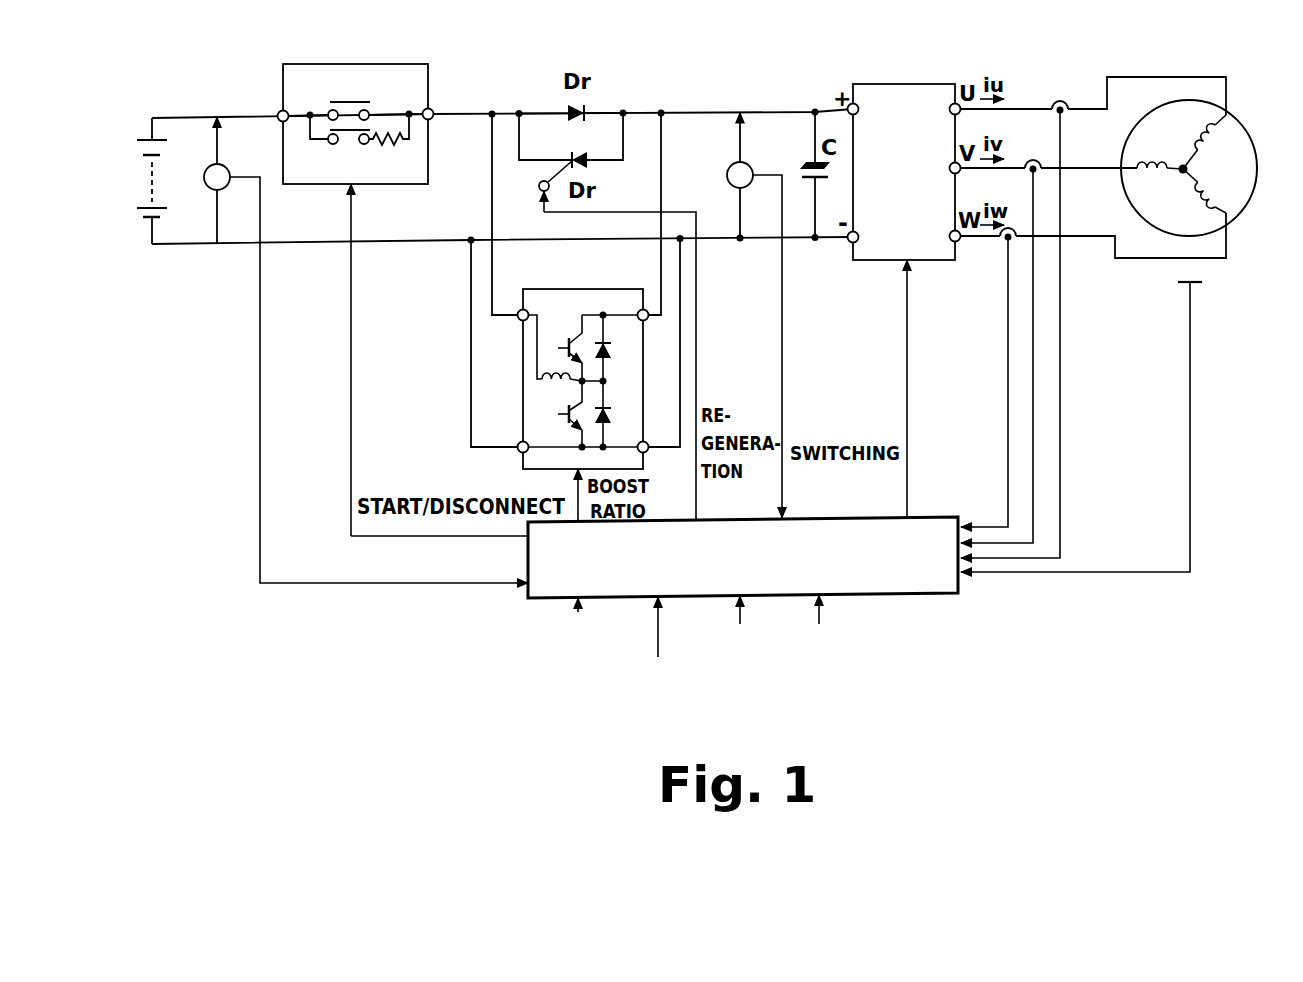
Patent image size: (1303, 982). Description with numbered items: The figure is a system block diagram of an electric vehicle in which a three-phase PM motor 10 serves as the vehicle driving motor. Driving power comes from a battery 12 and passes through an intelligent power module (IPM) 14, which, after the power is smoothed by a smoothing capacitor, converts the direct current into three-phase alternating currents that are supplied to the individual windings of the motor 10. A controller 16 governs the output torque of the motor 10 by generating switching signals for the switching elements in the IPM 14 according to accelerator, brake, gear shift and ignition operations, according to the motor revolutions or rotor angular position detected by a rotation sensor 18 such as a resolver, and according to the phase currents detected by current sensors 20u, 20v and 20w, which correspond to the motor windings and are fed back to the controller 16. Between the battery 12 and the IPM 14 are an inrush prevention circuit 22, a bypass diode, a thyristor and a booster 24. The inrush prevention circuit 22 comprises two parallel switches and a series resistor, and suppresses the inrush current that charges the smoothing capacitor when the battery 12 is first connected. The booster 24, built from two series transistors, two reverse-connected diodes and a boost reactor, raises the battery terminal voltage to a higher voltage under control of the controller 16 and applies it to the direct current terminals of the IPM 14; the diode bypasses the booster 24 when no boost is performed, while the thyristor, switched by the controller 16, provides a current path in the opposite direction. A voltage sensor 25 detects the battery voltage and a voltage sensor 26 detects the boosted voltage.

The three-phase PM motor 10 is at (1236, 124).
The battery 12 is at (149, 132).
The intelligent power module 14 is at (902, 84).
The controller 16 is at (938, 596).
The rotation sensor 18 is at (1203, 288).
The current sensor 20u is at (1072, 92).
The current sensor 20v is at (1042, 159).
The current sensor 20w is at (1004, 223).
The inrush prevention circuit 22 is at (369, 64).
The booster 24 is at (529, 291).
The voltage sensor 25 is at (207, 169).
The voltage sensor 26 is at (730, 170).